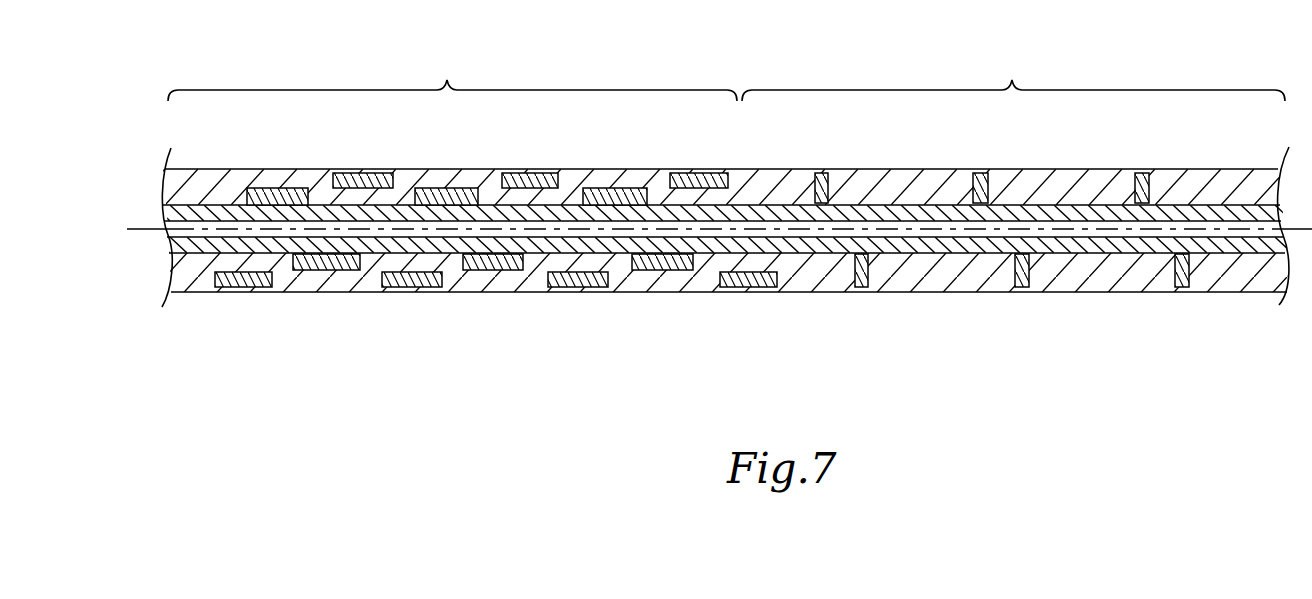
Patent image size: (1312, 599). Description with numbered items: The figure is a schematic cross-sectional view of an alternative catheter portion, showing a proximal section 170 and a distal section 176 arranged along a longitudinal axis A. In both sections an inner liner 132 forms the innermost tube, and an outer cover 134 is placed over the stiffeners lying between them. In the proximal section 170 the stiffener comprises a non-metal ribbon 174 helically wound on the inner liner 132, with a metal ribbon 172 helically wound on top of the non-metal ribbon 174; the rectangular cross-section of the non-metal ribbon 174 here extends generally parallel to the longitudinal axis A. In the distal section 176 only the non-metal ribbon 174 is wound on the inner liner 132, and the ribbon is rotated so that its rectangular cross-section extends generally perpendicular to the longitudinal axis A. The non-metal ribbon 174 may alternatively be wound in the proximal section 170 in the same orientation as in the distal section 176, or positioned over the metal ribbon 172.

The proximal section 170 is at (452, 74).
The distal section 176 is at (1013, 74).
The metal ribbon 172 is at (365, 169).
The non-metal ribbon 174 is at (257, 188).
The inner liner 132 is at (532, 247).
The outer cover 134 is at (1149, 283).
The longitudinal axis A is at (140, 233).